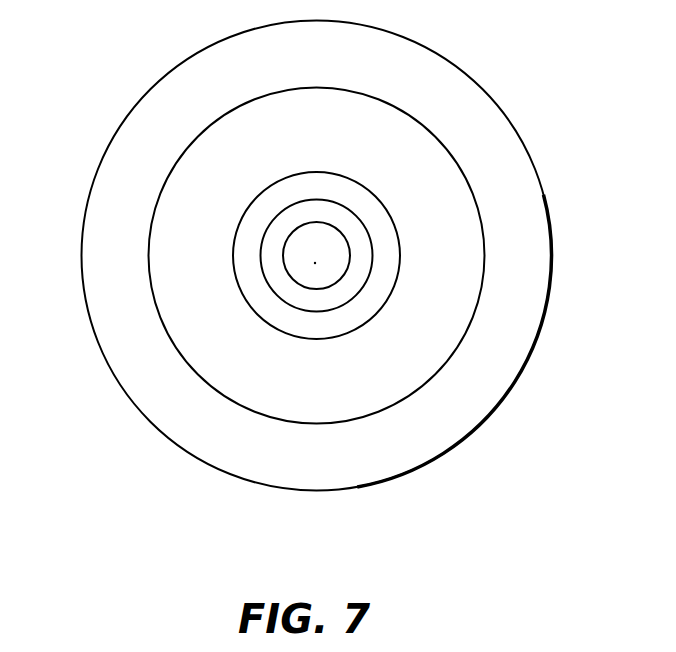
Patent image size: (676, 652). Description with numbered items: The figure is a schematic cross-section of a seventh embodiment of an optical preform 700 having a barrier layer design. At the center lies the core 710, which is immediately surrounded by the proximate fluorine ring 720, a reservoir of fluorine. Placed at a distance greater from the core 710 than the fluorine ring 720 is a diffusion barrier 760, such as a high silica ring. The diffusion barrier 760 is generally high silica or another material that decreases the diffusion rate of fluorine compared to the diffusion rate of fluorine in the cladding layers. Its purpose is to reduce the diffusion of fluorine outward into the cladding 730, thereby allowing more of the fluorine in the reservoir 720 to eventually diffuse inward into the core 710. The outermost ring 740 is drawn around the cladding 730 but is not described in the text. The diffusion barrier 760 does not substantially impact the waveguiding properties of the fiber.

The optical preform 700 is at (153, 474).
The core 710 is at (315, 263).
The fluorine ring 720 is at (333, 297).
The diffusion barrier 760 is at (362, 310).
The cladding 730 is at (409, 360).
The outer cladding 740 is at (478, 405).